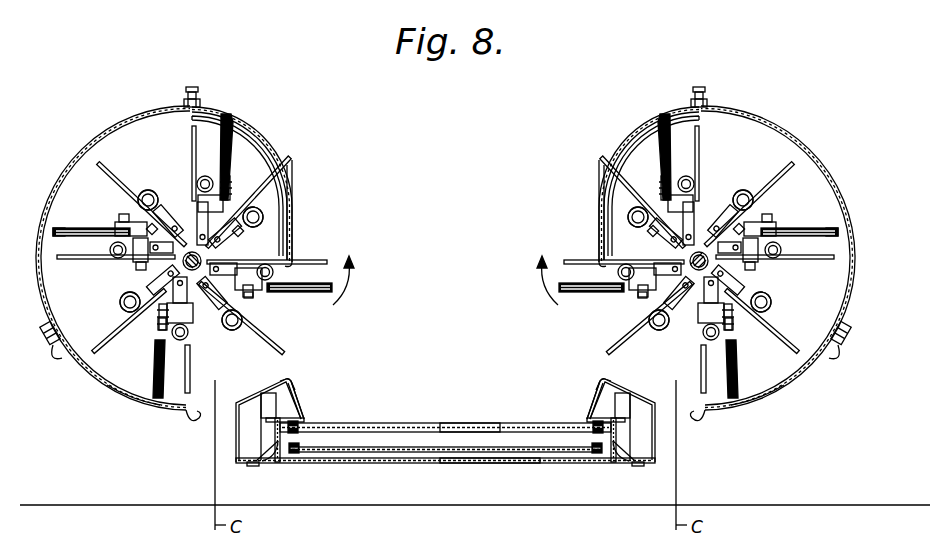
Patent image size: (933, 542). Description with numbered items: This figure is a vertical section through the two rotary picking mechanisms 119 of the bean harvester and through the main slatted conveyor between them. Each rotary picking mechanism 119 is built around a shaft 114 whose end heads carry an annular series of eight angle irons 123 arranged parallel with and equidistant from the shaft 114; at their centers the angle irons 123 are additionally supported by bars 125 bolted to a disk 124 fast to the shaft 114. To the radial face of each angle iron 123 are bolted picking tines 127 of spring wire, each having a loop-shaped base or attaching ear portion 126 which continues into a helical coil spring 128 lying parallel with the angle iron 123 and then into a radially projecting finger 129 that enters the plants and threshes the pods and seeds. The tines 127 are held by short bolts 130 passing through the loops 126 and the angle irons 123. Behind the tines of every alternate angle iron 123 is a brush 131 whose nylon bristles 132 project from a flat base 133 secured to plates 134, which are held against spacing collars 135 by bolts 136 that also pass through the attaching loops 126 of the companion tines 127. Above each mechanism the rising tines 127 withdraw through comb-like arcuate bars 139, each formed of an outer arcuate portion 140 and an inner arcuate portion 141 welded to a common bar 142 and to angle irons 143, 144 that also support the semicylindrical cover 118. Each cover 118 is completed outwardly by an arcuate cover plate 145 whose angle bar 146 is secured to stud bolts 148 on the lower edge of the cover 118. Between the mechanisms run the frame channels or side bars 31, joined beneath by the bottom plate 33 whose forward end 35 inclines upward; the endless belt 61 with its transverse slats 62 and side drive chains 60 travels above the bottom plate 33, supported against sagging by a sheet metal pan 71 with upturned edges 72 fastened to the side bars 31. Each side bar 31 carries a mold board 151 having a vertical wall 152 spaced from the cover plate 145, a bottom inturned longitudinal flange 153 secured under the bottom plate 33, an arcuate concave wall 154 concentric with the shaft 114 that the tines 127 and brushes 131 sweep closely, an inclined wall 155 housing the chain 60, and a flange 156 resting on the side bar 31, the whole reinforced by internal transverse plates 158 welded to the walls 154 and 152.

The channel 31 is at (262, 463).
The bottom plate 33 is at (490, 464).
The forward end 35 is at (350, 464).
The drive chain 60 is at (293, 455).
The endless belt 61 is at (430, 446).
The transverse slat 62 is at (373, 422).
The sheet metal pan 71 is at (480, 422).
The upturned edge 72 is at (297, 421).
The shaft 114 is at (190, 215).
The semicylindrical cover 118 is at (92, 146).
The rotary picking mechanism 119 is at (290, 323).
The angle iron 123 is at (270, 233).
The disk 124 is at (195, 305).
The bar 125 is at (150, 267).
The base or attaching ear portion 126 is at (193, 330).
The picking tine 127 is at (113, 168).
The helical coil spring 128 is at (116, 319).
The radially projecting finger 129 is at (112, 180).
The short bolt 130 is at (238, 240).
The brush 131 is at (228, 117).
The bristles 132 is at (54, 236).
The flat base 133 is at (242, 200).
The plate 134 is at (214, 180).
The collar 135 is at (241, 252).
The bolt 136 is at (283, 166).
The arcuate bar 139 is at (296, 190).
The outer arcuate portion 140 is at (291, 202).
The inner arcuate portion 141 is at (240, 153).
The common bar 142 is at (186, 110).
The angle iron 143 is at (197, 95).
The angle iron 144 is at (190, 88).
The arcuate cover plate 145 is at (107, 385).
The angle bar 146 is at (58, 360).
The stud bolt 148 is at (48, 345).
The mold board 151 is at (257, 394).
The vertical wall 152 is at (237, 448).
The bottom inturned longitudinal flange 153 is at (248, 468).
The arcuate concave wall 154 is at (288, 379).
The inclined wall 155 is at (300, 394).
The flange 156 is at (270, 412).
The internal transverse plate 158 is at (243, 431).